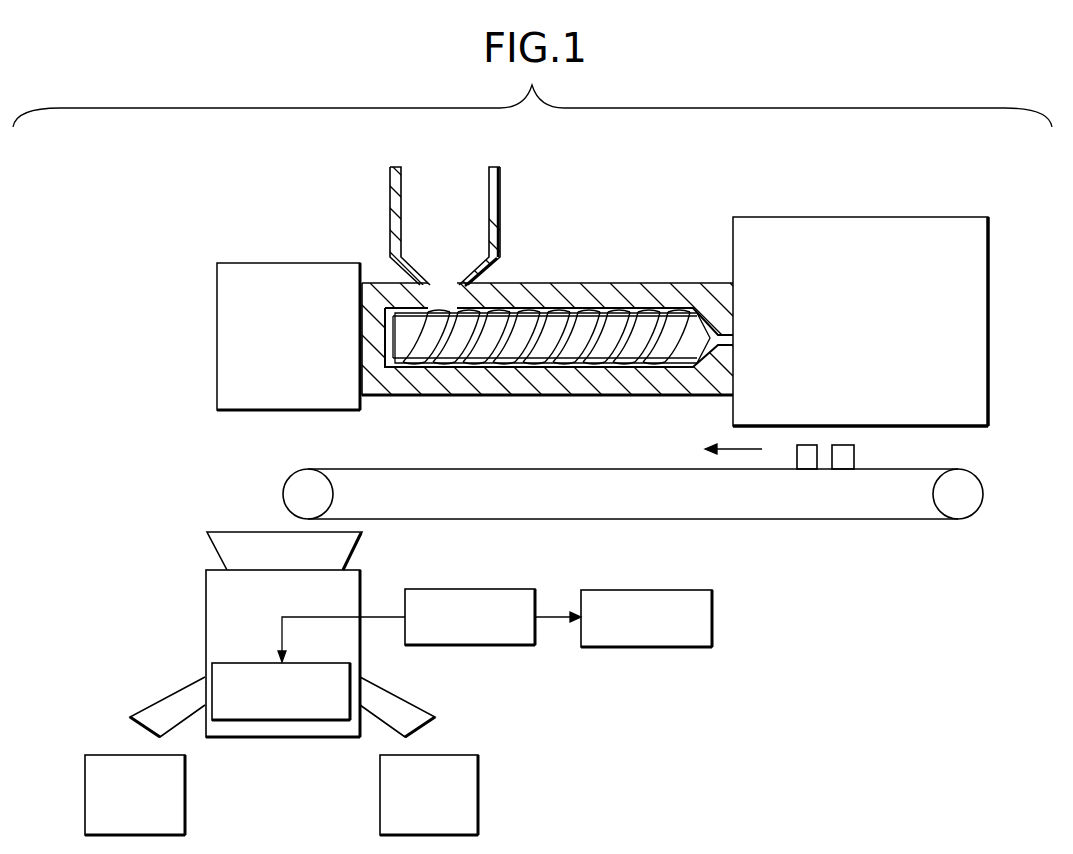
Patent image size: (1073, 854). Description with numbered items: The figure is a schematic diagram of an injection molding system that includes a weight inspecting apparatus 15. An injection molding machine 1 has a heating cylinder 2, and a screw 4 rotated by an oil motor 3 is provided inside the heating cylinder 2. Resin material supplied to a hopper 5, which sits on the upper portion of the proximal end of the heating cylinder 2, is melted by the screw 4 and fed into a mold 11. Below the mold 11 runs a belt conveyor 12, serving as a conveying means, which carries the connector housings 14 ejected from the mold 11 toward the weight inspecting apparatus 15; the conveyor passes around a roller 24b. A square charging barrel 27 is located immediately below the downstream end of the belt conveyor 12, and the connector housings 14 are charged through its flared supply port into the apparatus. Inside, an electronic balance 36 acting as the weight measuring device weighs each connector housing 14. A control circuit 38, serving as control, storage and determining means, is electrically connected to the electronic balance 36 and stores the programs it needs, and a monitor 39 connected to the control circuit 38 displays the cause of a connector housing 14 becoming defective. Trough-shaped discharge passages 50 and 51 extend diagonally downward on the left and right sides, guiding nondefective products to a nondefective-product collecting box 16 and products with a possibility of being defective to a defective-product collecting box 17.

The injection molding machine 1 is at (788, 210).
The heating cylinder 2 is at (628, 285).
The oil motor 3 is at (290, 261).
The screw 4 is at (540, 323).
The hopper 5 is at (498, 197).
The mold 11 is at (990, 335).
The belt conveyor 12 is at (872, 523).
The connector housings 14 is at (851, 460).
The weight inspecting apparatus 15 is at (195, 623).
The nondefective-product collecting box 16 is at (85, 796).
The defective-product collecting box 17 is at (480, 798).
The conveyor roller 24b is at (284, 492).
The charging barrel 27 is at (211, 550).
The electronic balance 36 is at (321, 722).
The control circuit 38 is at (512, 588).
The monitor 39 is at (682, 590).
The discharge passage 50 is at (151, 707).
The discharge passage 51 is at (404, 699).